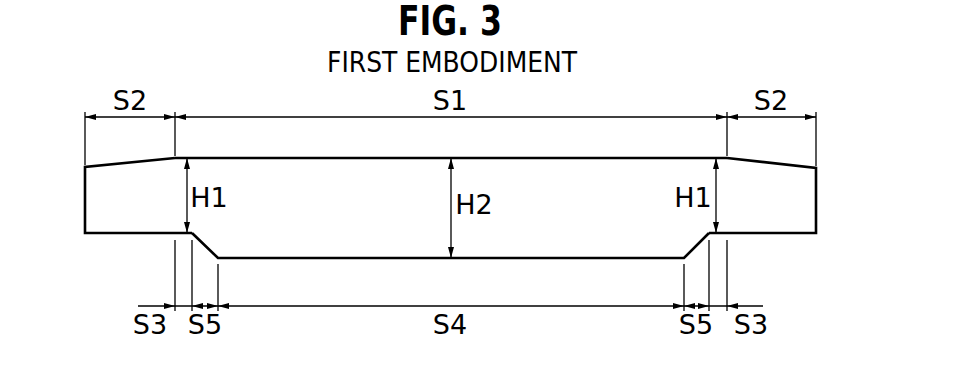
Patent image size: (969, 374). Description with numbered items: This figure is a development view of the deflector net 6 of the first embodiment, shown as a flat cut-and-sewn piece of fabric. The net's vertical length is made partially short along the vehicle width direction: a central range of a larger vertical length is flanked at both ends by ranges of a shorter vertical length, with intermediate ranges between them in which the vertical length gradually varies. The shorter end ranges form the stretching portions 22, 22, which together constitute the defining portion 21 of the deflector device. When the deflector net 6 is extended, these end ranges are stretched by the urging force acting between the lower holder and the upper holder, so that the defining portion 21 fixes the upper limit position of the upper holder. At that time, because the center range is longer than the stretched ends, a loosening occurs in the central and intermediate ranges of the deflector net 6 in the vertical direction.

The defining portion 21 is at (136, 244).
The stretching portion 22 is at (766, 244).
The deflector net 6 is at (324, 246).